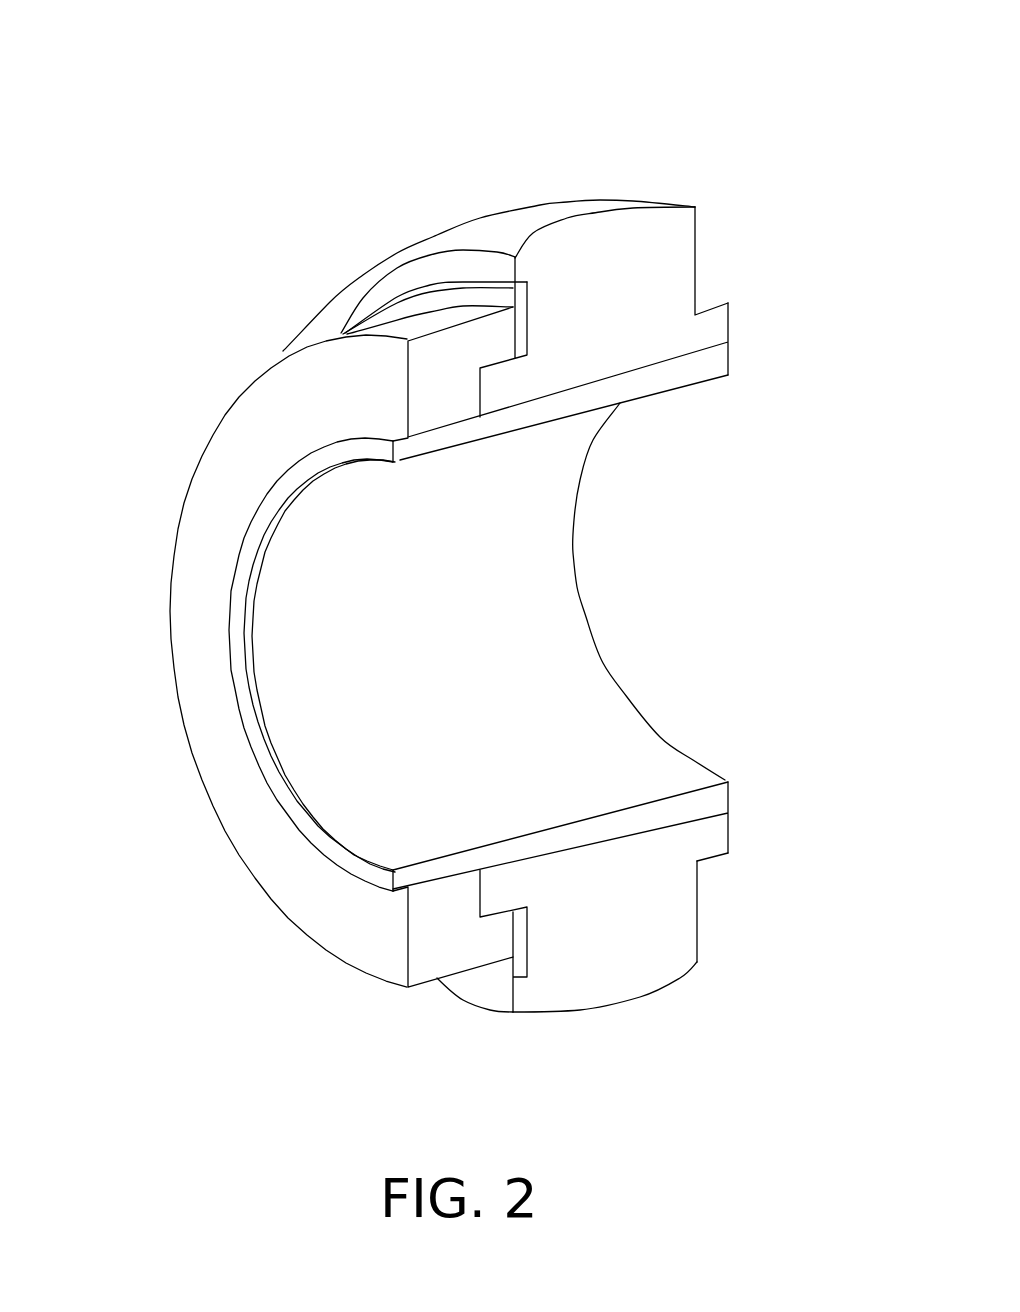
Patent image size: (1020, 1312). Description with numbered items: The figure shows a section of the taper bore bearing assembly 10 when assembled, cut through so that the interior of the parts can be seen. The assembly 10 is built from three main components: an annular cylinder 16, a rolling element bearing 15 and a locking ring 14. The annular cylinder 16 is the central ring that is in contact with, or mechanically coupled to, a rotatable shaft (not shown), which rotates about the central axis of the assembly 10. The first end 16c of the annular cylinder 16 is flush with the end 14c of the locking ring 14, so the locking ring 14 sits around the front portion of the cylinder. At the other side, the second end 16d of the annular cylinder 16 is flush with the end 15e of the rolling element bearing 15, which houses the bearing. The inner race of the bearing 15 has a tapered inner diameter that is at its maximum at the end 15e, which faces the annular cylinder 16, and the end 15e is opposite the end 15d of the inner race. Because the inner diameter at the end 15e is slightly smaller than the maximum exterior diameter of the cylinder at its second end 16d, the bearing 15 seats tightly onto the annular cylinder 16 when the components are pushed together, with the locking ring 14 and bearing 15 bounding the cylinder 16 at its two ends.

The taper bore bearing assembly 10 is at (352, 150).
The locking ring 14 is at (215, 475).
The end of the locking ring 14c is at (237, 710).
The rolling element bearing 15 is at (603, 948).
The end of the inner race 15d is at (500, 892).
The end of the inner race 15e is at (715, 833).
The annular cylinder 16 is at (573, 680).
The first end of the annular cylinder 16c is at (318, 823).
The second end of the annular cylinder 16d is at (728, 782).